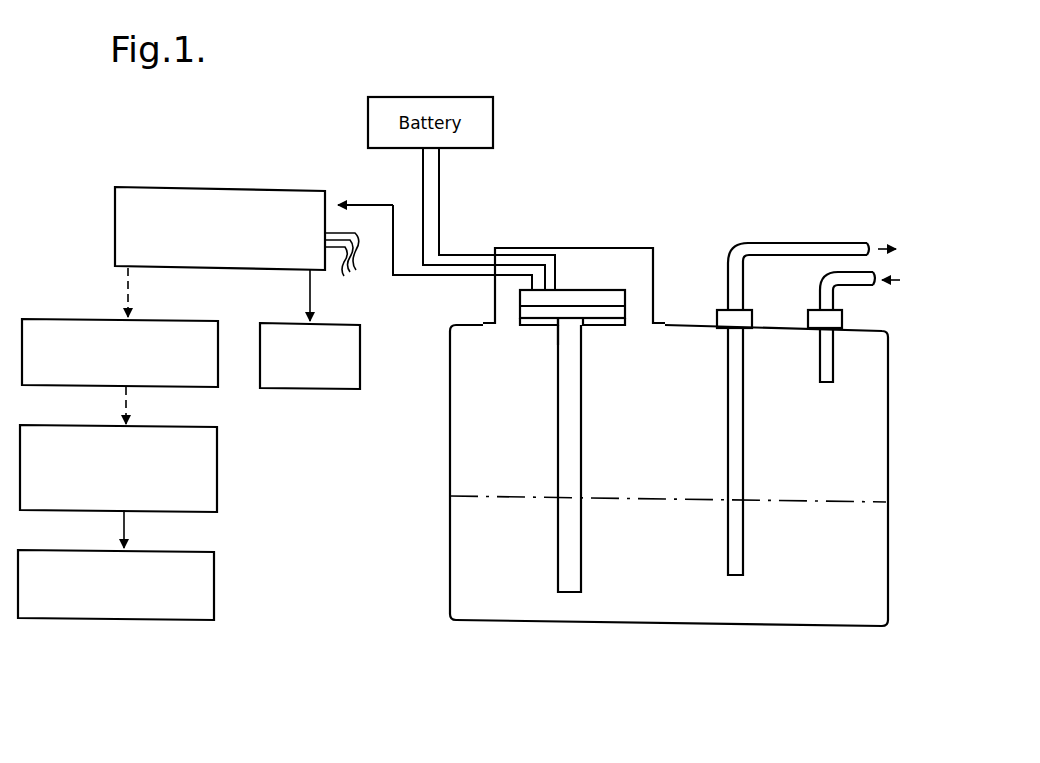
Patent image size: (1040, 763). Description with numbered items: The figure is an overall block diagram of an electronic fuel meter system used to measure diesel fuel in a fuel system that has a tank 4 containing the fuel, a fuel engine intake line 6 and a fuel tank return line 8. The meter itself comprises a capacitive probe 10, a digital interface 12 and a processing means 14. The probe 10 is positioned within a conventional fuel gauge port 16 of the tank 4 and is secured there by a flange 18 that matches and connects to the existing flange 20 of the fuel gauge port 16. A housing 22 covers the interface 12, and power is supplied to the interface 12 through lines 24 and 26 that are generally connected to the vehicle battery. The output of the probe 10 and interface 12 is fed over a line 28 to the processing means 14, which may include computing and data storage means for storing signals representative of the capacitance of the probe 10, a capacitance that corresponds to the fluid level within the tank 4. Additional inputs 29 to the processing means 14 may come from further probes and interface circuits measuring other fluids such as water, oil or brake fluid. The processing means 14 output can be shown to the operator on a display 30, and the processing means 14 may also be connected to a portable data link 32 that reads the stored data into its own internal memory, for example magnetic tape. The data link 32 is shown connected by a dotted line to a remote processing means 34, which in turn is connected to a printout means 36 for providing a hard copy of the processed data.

The tank 4 is at (450, 468).
The fuel engine intake line 6 is at (728, 412).
The fuel tank return line 8 is at (820, 368).
The capacitive probe 10 is at (558, 410).
The digital interface 12 is at (612, 291).
The processing means 14 is at (210, 189).
The fuel gauge port 16 is at (560, 326).
The flange 18 is at (608, 318).
The existing flange 20 is at (517, 322).
The housing 22 is at (580, 248).
The line 24 is at (443, 196).
The line 26 is at (423, 178).
The line 28 is at (348, 205).
The additional inputs 29 is at (346, 267).
The display 30 is at (298, 389).
The data link 32 is at (70, 319).
The remote processing means 34 is at (217, 471).
The printout means 36 is at (214, 578).